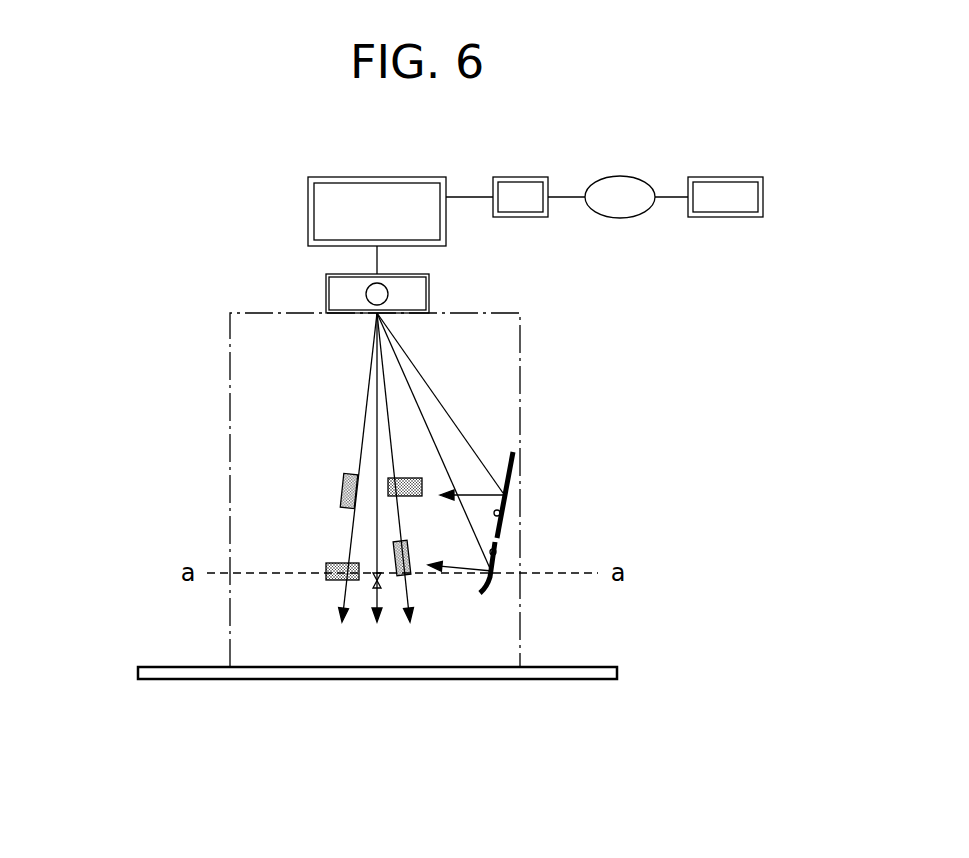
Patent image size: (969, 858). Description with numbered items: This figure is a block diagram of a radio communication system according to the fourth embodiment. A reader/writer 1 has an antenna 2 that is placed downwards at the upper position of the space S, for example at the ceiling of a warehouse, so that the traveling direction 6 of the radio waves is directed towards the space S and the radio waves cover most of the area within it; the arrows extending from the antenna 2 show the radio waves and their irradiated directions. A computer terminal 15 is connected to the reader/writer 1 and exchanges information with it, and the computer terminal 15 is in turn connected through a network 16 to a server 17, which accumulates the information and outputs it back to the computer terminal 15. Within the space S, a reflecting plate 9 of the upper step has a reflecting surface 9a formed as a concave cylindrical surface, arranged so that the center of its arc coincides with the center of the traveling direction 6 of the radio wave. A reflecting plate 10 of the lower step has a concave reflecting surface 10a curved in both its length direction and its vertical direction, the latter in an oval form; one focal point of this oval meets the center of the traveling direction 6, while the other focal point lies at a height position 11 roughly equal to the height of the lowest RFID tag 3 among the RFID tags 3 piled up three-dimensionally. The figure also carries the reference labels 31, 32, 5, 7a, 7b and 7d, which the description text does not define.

The reader/writer 1 is at (308, 192).
The antenna 2 is at (326, 290).
The RFID tag 3 is at (400, 478).
The first sensor 31 is at (340, 486).
The second sensor 32 is at (397, 567).
The base 5 is at (570, 668).
The traveling direction 6 is at (376, 596).
The first beam portion 7a is at (408, 352).
The second beam portion 7b is at (417, 400).
The reflected beam 7d is at (478, 495).
The reflecting plate 9 is at (510, 473).
The reflecting surface 9a is at (505, 517).
The reflecting plate 10 is at (487, 590).
The reflecting surface 10a is at (498, 555).
The height position 11 is at (372, 583).
The computer terminal 15 is at (527, 177).
The network 16 is at (618, 176).
The server 17 is at (725, 177).
The space S is at (520, 342).